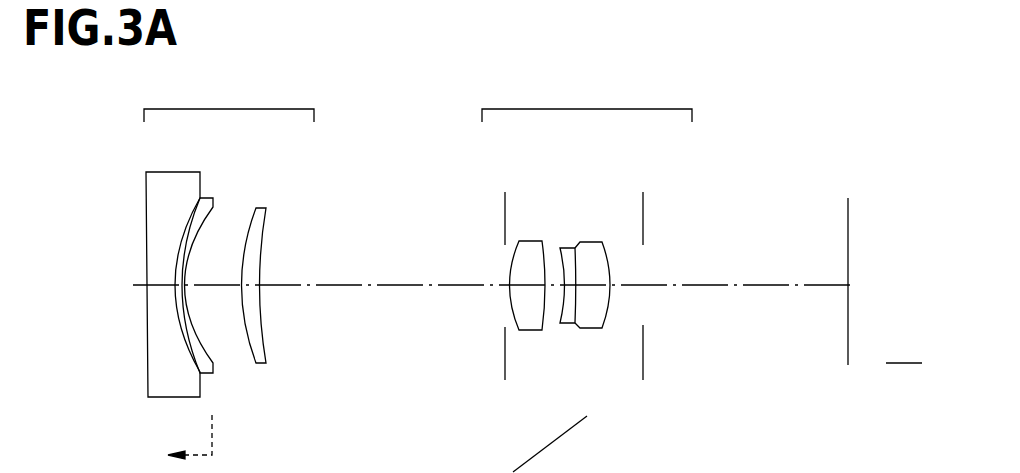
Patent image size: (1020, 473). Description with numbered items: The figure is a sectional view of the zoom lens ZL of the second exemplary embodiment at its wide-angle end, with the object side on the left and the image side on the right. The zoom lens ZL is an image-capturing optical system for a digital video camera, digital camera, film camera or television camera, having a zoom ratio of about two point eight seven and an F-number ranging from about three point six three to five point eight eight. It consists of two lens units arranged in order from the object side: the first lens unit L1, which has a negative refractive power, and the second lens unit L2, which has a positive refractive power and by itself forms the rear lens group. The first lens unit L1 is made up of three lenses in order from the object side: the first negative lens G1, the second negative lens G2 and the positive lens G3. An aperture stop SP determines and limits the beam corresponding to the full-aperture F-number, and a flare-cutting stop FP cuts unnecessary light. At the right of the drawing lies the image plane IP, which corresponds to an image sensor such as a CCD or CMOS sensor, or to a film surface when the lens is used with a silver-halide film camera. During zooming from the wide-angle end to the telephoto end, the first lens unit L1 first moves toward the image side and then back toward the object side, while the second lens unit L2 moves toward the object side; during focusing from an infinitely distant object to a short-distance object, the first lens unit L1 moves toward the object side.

The first lens unit L1 is at (229, 99).
The second lens unit L2 is at (587, 203).
The first negative lens G1 is at (200, 178).
The second negative lens G2 is at (204, 198).
The positive lens G3 is at (256, 237).
The aperture stop SP is at (505, 220).
The flare-cutting stop FP is at (645, 218).
The image plane IP is at (850, 258).
The zoom lens ZL is at (904, 351).